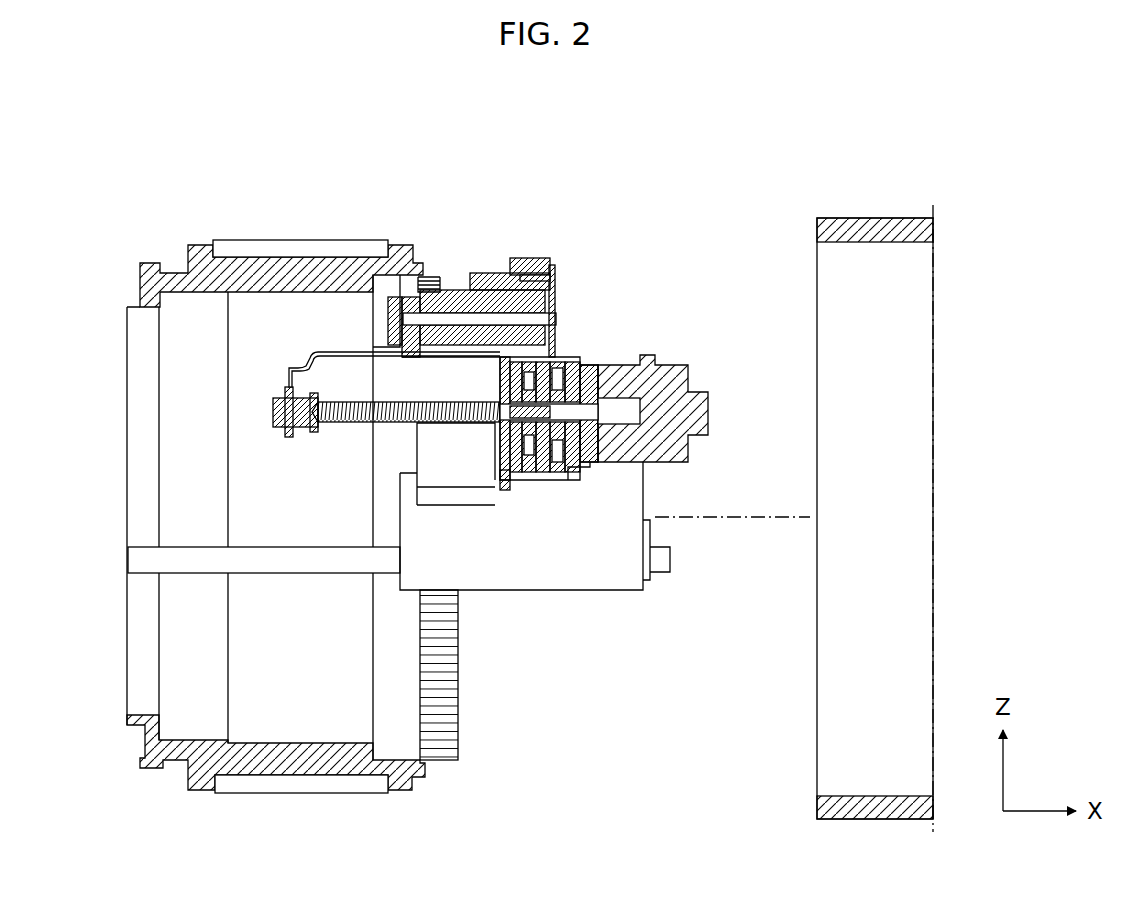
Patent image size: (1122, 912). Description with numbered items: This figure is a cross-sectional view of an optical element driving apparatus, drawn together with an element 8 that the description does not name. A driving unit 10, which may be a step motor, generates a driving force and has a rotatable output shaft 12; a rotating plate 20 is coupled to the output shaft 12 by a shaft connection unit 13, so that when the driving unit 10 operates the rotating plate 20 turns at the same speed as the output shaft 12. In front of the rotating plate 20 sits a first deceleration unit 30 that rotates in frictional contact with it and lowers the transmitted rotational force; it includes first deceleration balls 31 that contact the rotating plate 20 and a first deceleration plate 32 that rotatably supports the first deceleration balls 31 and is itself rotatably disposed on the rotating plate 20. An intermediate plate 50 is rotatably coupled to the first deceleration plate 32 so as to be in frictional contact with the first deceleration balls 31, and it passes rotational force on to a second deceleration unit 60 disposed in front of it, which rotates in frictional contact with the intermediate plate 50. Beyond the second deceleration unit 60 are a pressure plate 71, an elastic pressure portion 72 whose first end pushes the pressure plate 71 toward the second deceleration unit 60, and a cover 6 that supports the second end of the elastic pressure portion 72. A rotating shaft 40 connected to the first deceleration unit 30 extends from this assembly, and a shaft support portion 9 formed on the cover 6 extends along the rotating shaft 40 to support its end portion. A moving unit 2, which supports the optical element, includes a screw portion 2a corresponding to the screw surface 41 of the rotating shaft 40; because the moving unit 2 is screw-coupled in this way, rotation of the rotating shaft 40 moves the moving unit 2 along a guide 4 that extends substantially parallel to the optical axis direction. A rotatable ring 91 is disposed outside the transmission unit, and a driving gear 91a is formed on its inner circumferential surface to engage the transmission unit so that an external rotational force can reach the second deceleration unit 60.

The moving unit 2 is at (445, 473).
The screw portion 2a is at (468, 445).
The guide 4 is at (148, 566).
The cover 6 is at (512, 488).
The panel 8 is at (872, 220).
The shaft support portion 9 is at (292, 370).
The driving unit 10 is at (680, 363).
The output shaft 12 is at (582, 413).
The shaft connection unit 13 is at (620, 400).
The rotating plate 20 is at (590, 365).
The first deceleration unit 30 is at (597, 348).
The first deceleration balls 31 is at (577, 365).
The first deceleration plate 32 is at (558, 363).
The rotating shaft 40 is at (334, 397).
The screw surface 41 is at (355, 403).
The intermediate plate 50 is at (542, 357).
The second deceleration unit 60 is at (528, 350).
The pressure plate 71 is at (516, 358).
The elastic pressure portion 72 is at (503, 360).
The rotatable ring 91 is at (180, 790).
The driving gear 91a is at (457, 703).